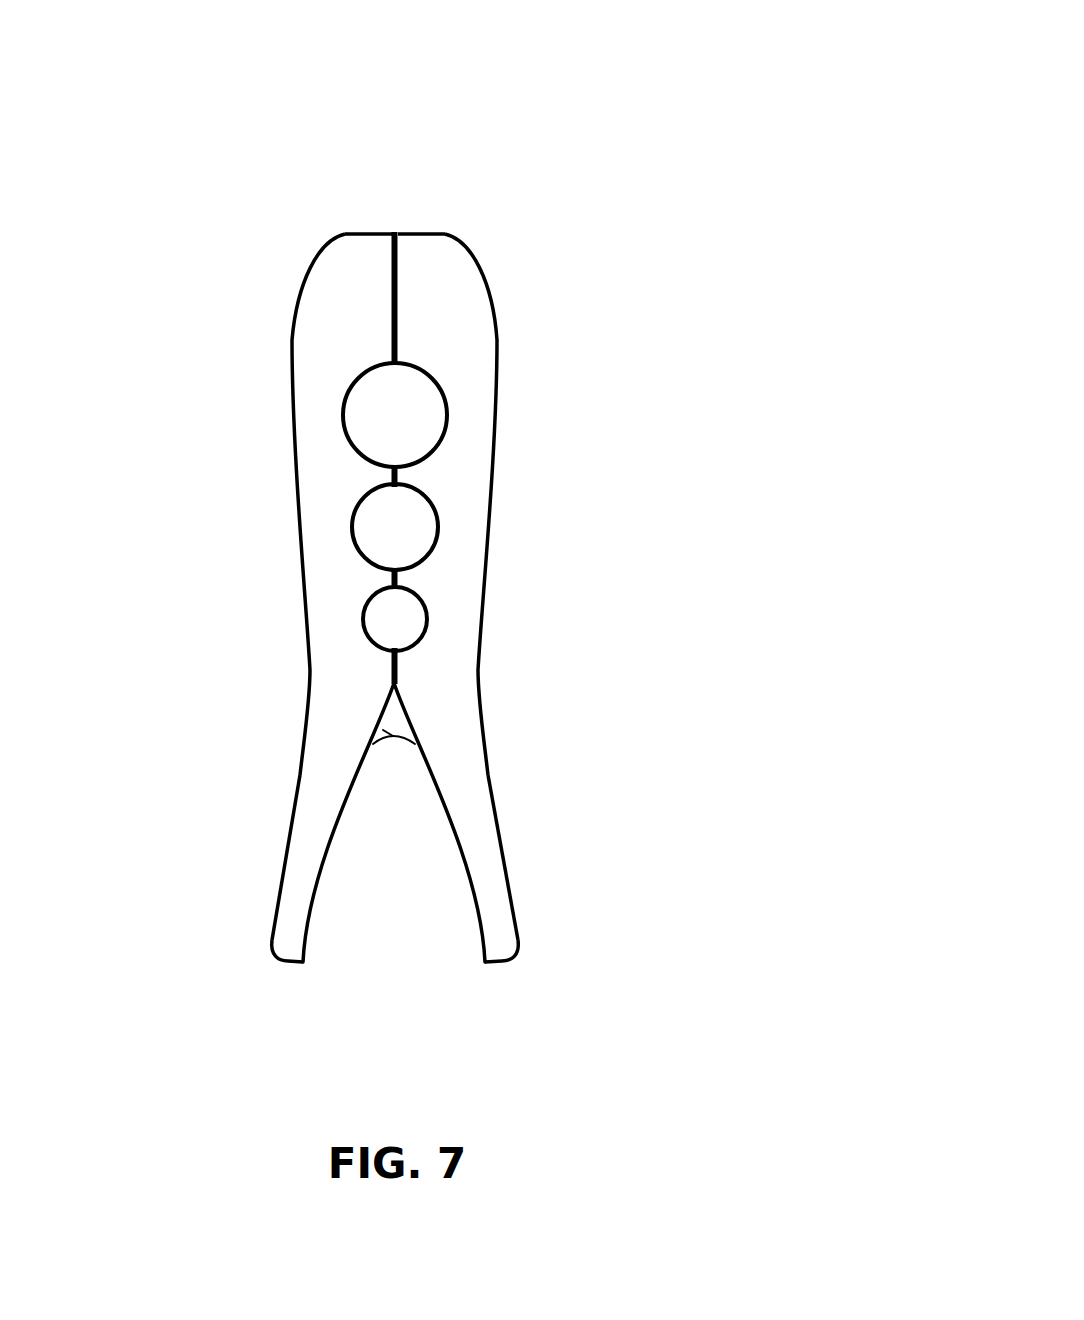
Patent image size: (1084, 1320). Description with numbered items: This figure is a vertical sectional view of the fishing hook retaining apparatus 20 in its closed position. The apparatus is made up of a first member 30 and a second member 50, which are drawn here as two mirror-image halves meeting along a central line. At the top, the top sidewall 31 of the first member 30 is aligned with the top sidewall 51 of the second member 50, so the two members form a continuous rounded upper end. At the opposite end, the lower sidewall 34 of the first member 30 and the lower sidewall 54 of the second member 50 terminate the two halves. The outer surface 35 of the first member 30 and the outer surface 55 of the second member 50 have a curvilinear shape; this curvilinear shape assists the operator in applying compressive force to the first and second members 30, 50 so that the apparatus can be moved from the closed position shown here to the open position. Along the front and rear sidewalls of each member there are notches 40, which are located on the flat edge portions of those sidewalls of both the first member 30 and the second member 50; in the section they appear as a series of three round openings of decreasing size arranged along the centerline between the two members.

The fishing hook retaining apparatus 20 is at (499, 546).
The first member 30 is at (480, 235).
The top sidewall 31 is at (425, 234).
The lower sidewall 34 is at (507, 962).
The outer surface 35 is at (488, 770).
The notches 40 is at (366, 641).
The second member 50 is at (302, 228).
The top sidewall 51 is at (365, 235).
The lower sidewall 54 is at (293, 963).
The outer surface 55 is at (303, 767).